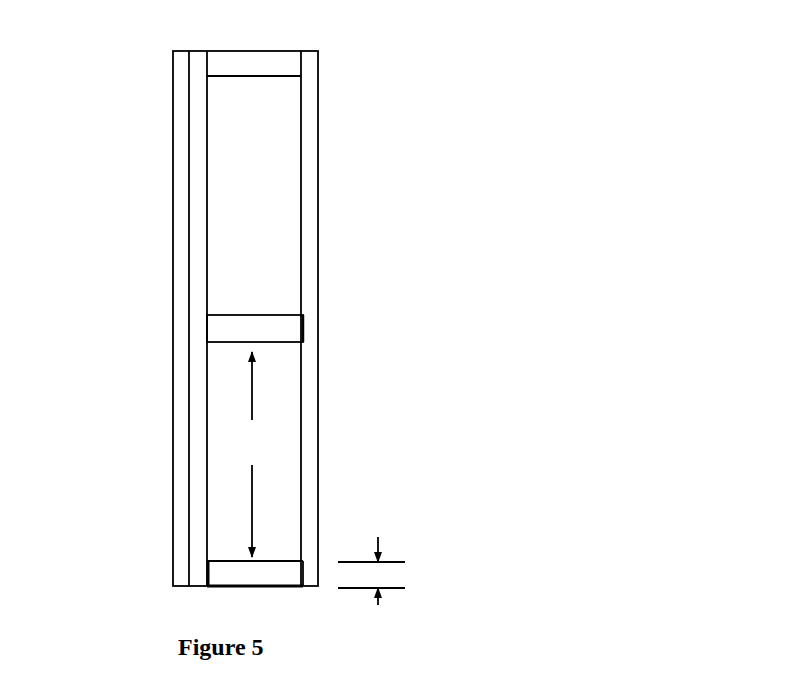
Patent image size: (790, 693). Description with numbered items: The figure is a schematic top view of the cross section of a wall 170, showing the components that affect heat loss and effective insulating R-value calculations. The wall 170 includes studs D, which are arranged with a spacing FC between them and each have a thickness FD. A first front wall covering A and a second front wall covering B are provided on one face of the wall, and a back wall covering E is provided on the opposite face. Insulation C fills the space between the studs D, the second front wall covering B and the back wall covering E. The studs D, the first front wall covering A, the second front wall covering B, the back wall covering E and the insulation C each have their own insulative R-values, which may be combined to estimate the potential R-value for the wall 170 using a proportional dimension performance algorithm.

The wall 170 is at (129, 131).
The first front wall covering A is at (186, 76).
The second front wall covering B is at (203, 128).
The insulation C is at (237, 215).
The studs D is at (288, 63).
The back wall covering E is at (311, 429).
The spacing FC is at (258, 454).
The thickness FD is at (371, 556).